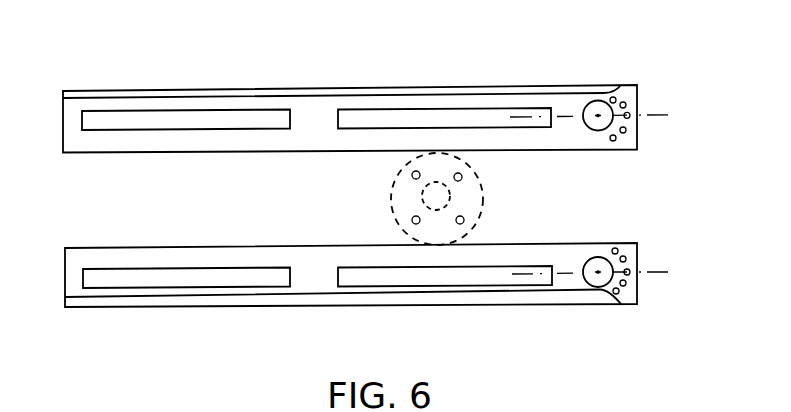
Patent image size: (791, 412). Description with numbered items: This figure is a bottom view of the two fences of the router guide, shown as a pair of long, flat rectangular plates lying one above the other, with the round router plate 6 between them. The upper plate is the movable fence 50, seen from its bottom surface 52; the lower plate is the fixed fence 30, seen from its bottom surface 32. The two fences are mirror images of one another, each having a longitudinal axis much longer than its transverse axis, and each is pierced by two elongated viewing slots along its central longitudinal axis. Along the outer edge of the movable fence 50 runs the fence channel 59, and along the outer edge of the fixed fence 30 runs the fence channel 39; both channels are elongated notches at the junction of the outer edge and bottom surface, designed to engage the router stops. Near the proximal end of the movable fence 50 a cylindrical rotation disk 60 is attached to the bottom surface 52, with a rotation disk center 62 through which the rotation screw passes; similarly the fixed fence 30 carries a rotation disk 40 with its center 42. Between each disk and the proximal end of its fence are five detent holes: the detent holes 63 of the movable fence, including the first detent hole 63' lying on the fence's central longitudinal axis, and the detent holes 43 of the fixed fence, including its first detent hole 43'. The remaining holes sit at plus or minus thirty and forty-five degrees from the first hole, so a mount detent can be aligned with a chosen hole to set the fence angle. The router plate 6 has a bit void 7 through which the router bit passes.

The fence channel 59 is at (297, 95).
The movable fence 50 is at (225, 142).
The bottom surface 52 is at (322, 137).
The rotation disk 60 is at (590, 104).
The rotation disk center 62 is at (598, 116).
The detent holes 63 is at (650, 109).
The first detent hole 63' is at (665, 104).
The router plate 6 is at (468, 193).
The bit void 7 is at (428, 195).
The fence channel 39 is at (325, 298).
The fixed fence 30 is at (135, 257).
The bottom surface 32 is at (250, 257).
The rotation disk 40 is at (592, 259).
The rotation disk center 42 is at (598, 272).
The detent holes 43 is at (651, 260).
The first detent hole 43' is at (665, 260).